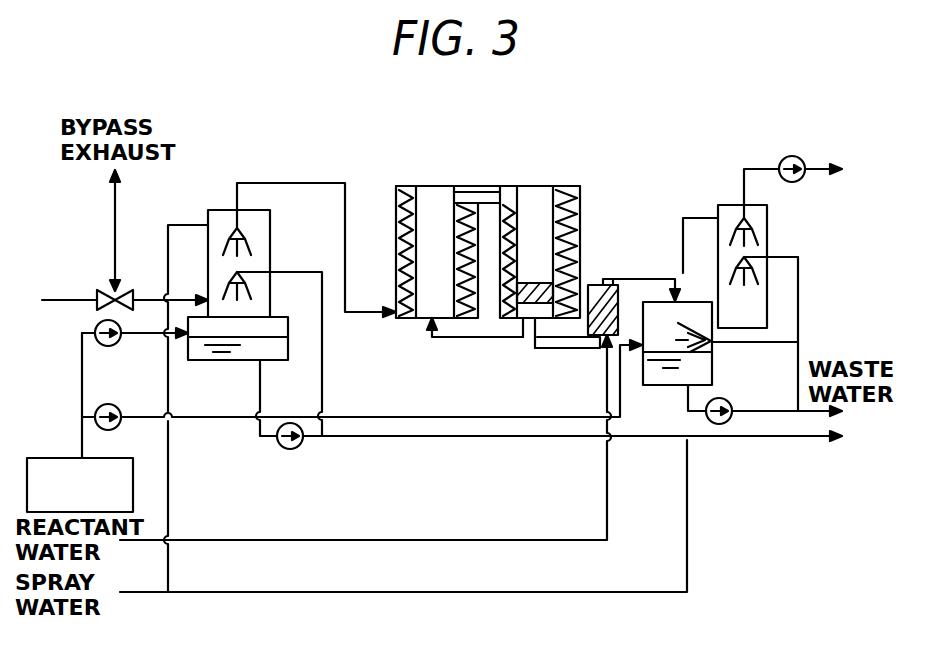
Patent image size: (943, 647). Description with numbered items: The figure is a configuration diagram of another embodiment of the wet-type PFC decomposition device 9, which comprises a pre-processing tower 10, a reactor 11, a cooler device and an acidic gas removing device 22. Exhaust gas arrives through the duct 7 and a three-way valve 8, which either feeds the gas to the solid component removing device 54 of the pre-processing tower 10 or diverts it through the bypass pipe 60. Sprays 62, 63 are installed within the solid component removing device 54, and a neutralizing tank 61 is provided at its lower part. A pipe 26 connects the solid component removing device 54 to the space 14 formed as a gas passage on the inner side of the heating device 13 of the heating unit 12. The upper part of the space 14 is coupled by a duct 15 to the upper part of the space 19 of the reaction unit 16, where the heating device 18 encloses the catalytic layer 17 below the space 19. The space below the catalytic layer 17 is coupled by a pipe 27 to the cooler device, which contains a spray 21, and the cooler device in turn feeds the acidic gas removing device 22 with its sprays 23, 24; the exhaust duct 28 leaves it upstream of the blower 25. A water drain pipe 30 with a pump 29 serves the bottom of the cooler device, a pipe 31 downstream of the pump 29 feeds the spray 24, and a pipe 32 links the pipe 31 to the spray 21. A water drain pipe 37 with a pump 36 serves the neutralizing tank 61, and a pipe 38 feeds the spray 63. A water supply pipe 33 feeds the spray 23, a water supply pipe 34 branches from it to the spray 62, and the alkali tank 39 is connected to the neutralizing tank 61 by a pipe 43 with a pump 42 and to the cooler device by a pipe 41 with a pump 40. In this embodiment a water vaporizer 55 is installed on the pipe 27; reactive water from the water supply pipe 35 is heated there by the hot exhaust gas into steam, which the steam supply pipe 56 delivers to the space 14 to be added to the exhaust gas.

The duct 7 is at (64, 300).
The three-way valve 8 is at (108, 292).
The PFC decomposition device 9 is at (394, 152).
The pre-processing tower 10 is at (272, 226).
The reactor 11 is at (541, 186).
The heating unit 12 is at (398, 232).
The heating device 13 is at (398, 320).
The space 14 is at (440, 185).
The duct 15 is at (488, 186).
The reaction unit 16 is at (580, 196).
The catalytic layer 17 is at (526, 332).
The heating device 18 is at (580, 242).
The space 19 is at (552, 243).
The spray 21 is at (713, 352).
The acidic gas removing device 22 is at (771, 256).
The spray 23 is at (756, 228).
The spray 24 is at (812, 322).
The blower 25 is at (783, 160).
The pipe 26 is at (313, 182).
The pipe 27 is at (560, 350).
The exhaust duct 28 is at (743, 182).
The pump 29 is at (722, 427).
The water drain pipe 30 is at (786, 415).
The pipe 31 is at (799, 314).
The pipe 32 is at (768, 346).
The water supply pipe 33 is at (510, 590).
The water supply pipe 34 is at (170, 455).
The water supply pipe 35 is at (384, 538).
The pump 36 is at (298, 448).
The water drain pipe 37 is at (463, 438).
The pipe 38 is at (323, 378).
The alkali tank 39 is at (50, 457).
The pump 40 is at (121, 422).
The pipe 41 is at (234, 421).
The pump 42 is at (108, 347).
The pipe 43 is at (142, 335).
The solid component removing device 54 is at (207, 283).
The water vaporizer 55 is at (612, 278).
The steam supply pipe 56 is at (452, 340).
The pipe 60 is at (117, 222).
The neutralizing tank 61 is at (205, 361).
The spray 62 is at (243, 224).
The spray 63 is at (246, 284).